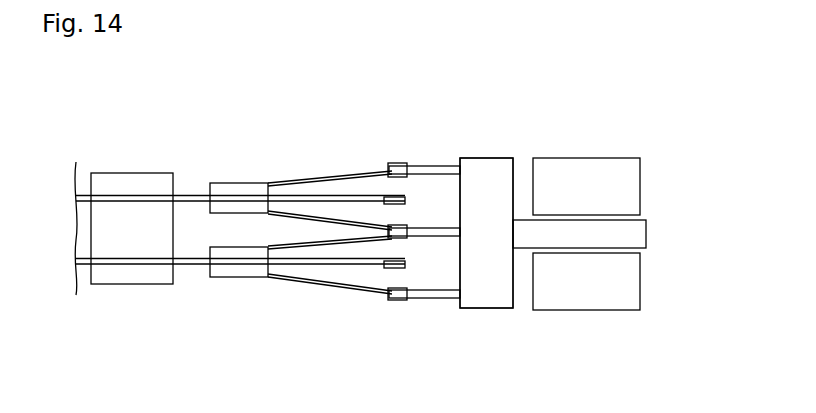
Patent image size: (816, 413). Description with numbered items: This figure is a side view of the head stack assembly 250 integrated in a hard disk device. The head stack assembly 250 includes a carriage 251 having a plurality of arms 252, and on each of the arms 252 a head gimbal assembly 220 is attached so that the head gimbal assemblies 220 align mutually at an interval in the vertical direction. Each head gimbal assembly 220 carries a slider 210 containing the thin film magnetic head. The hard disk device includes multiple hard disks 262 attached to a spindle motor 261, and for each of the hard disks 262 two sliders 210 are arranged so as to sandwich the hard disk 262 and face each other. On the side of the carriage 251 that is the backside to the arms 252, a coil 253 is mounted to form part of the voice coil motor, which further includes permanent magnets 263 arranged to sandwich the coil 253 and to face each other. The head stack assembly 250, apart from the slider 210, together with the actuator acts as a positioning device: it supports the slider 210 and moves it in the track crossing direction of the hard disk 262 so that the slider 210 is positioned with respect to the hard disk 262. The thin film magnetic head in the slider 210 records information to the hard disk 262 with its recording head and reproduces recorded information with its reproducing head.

The slider 210 is at (208, 187).
The head gimbal assembly 220 is at (323, 172).
The head stack assembly 250 is at (500, 138).
The carriage 251 is at (487, 292).
The arm 252 is at (405, 167).
The coil 253 is at (635, 238).
The spindle motor 261 is at (113, 180).
The hard disk 262 is at (187, 190).
The permanent magnet 263 is at (582, 158).